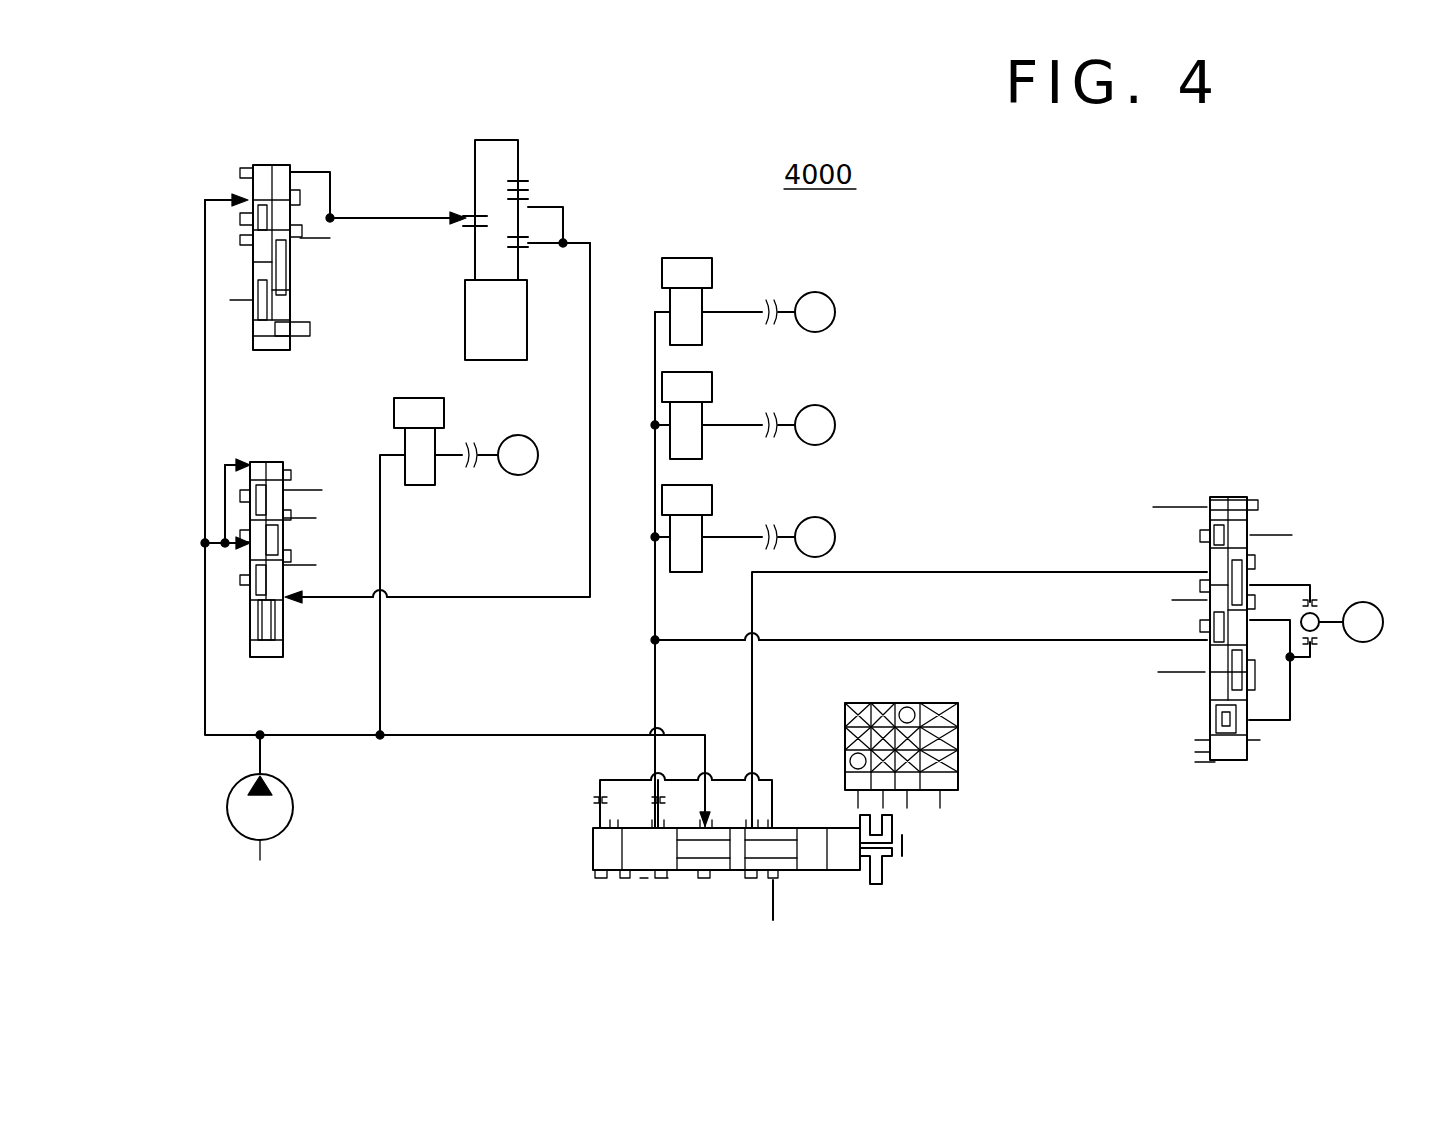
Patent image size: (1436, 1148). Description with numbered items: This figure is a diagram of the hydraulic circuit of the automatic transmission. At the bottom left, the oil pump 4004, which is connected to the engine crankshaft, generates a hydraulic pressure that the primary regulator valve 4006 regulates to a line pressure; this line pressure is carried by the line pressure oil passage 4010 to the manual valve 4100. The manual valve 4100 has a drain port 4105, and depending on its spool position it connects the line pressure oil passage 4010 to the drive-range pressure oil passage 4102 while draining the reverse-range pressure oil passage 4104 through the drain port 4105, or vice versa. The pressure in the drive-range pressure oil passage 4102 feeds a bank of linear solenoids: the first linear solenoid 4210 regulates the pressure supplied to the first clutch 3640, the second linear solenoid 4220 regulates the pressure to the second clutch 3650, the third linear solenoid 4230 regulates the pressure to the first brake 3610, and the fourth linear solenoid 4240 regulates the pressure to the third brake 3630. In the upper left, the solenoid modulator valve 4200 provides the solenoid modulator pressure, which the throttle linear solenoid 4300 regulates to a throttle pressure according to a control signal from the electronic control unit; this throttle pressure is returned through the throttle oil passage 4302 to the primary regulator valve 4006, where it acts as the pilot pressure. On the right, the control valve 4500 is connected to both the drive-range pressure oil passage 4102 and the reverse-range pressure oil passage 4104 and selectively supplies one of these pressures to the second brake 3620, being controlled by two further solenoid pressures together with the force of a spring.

The oil pump 4004 is at (294, 787).
The primary regulator valve 4006 is at (262, 660).
The line pressure oil passage 4010 is at (306, 735).
The manual valve 4100 is at (576, 877).
The D-range pressure oil passage 4102 is at (1074, 643).
The R-range pressure oil passage 4104 is at (1100, 542).
The drain port 4105 is at (782, 884).
The solenoid modulator valve 4200 is at (271, 355).
The SL1 linear solenoid 4210 is at (712, 280).
The SL2 linear solenoid 4220 is at (712, 394).
The SL3 linear solenoid 4230 is at (712, 507).
The SL4 linear solenoid 4240 is at (415, 398).
The SLT linear solenoid 4300 is at (473, 293).
The SLT oil passage 4302 is at (541, 598).
The B2 control valve 4500 is at (1270, 505).
The B1 brake 3610 is at (837, 518).
The B2 brake 3620 is at (1353, 644).
The B3 brake 3630 is at (512, 438).
The C1 clutch 3640 is at (837, 292).
The C2 clutch 3650 is at (837, 406).